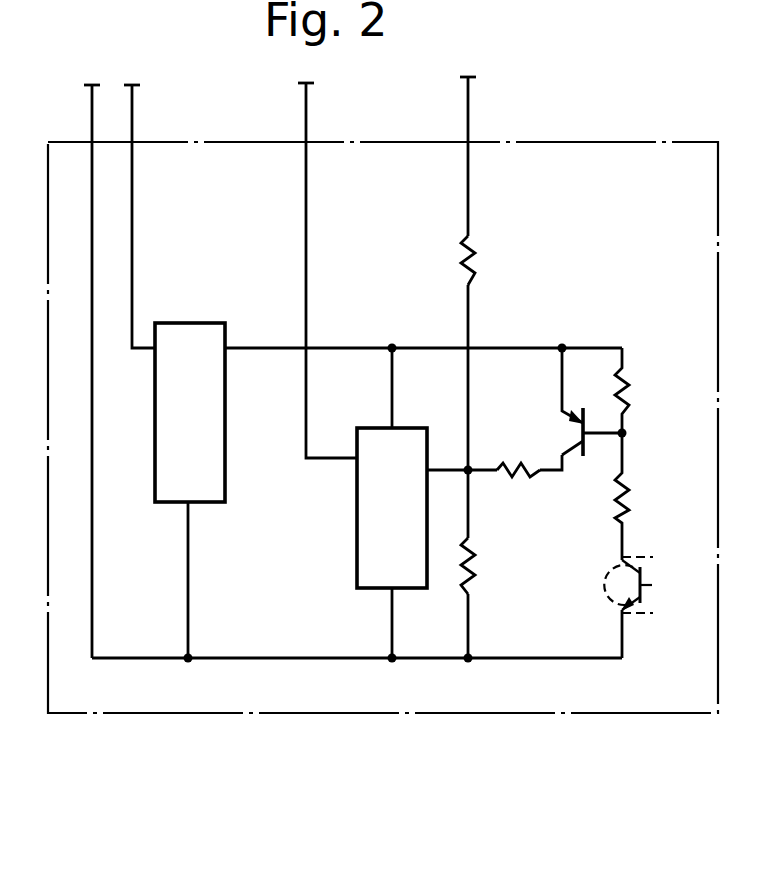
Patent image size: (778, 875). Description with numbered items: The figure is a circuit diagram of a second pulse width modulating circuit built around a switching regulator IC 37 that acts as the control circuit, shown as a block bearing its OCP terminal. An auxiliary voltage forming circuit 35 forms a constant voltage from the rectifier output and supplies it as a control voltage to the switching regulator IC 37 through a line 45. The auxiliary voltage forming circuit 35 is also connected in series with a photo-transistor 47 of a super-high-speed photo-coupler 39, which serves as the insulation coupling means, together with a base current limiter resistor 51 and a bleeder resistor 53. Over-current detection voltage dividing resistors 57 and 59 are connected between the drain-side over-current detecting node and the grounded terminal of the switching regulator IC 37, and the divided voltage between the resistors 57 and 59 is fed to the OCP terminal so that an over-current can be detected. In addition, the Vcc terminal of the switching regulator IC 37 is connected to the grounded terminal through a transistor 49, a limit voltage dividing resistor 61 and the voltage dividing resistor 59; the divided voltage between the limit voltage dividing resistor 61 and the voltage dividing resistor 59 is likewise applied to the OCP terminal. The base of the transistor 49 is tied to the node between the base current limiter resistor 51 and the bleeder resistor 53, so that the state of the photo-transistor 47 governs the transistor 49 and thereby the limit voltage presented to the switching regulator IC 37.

The auxiliary voltage forming circuit 35 is at (190, 322).
The switching regulator IC 37 is at (357, 518).
The photo-coupler 39 is at (652, 620).
The line 45 is at (133, 110).
The photo-transistor 47 is at (652, 585).
The transistor 49 is at (573, 446).
The base current limiter resistor 51 is at (628, 512).
The bleeder resistor 53 is at (630, 392).
The over-current detection voltage dividing resistor 57 is at (475, 259).
The over-current detection voltage dividing resistor 59 is at (474, 574).
The limit voltage dividing resistor 61 is at (518, 478).